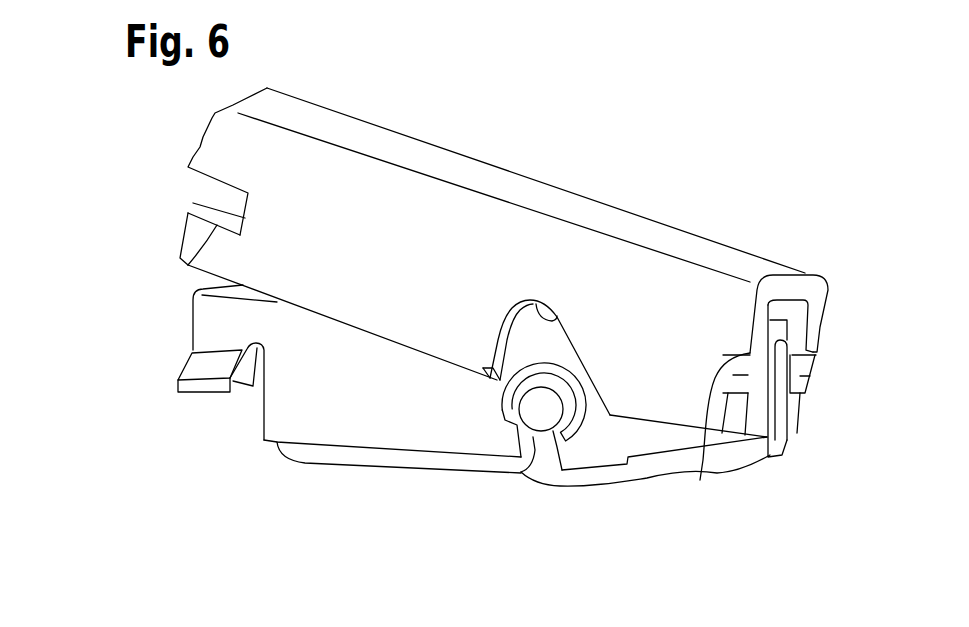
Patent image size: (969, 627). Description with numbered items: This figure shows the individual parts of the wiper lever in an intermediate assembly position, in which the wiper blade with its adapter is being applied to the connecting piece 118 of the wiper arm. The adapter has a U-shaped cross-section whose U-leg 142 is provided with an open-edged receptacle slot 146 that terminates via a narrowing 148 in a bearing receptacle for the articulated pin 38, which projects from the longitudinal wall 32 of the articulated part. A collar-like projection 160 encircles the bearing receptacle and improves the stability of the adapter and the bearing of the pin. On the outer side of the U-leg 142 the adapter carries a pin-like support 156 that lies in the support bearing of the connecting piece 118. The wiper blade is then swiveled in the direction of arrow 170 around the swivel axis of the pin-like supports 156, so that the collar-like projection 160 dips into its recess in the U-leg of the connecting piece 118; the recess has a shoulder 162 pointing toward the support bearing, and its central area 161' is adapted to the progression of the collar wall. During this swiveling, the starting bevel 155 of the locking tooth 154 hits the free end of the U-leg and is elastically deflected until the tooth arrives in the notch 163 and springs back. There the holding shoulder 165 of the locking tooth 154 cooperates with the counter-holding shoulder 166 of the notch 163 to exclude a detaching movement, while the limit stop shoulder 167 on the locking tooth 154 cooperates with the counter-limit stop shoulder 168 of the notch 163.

The connecting piece 118 is at (493, 166).
The central area of recess 161' is at (587, 277).
The articulated pin 38 is at (543, 404).
The notch 163 is at (197, 190).
The counter-limit stop shoulder 168 is at (227, 202).
The counter-holding shoulder 166 is at (215, 225).
The starting bevel 155 is at (202, 365).
The locking tooth 154 is at (207, 395).
The holding shoulder 165 is at (243, 380).
The limit stop shoulder 167 is at (247, 378).
The arrow 170 is at (265, 451).
The shoulder 162 is at (488, 370).
The collar-like projection 160 is at (502, 410).
The receptacle slot 146 is at (532, 440).
The narrowing 148 is at (530, 432).
The U-leg 142 is at (615, 440).
The pin-like support 156 is at (700, 480).
The longitudinal wall 32 is at (787, 440).